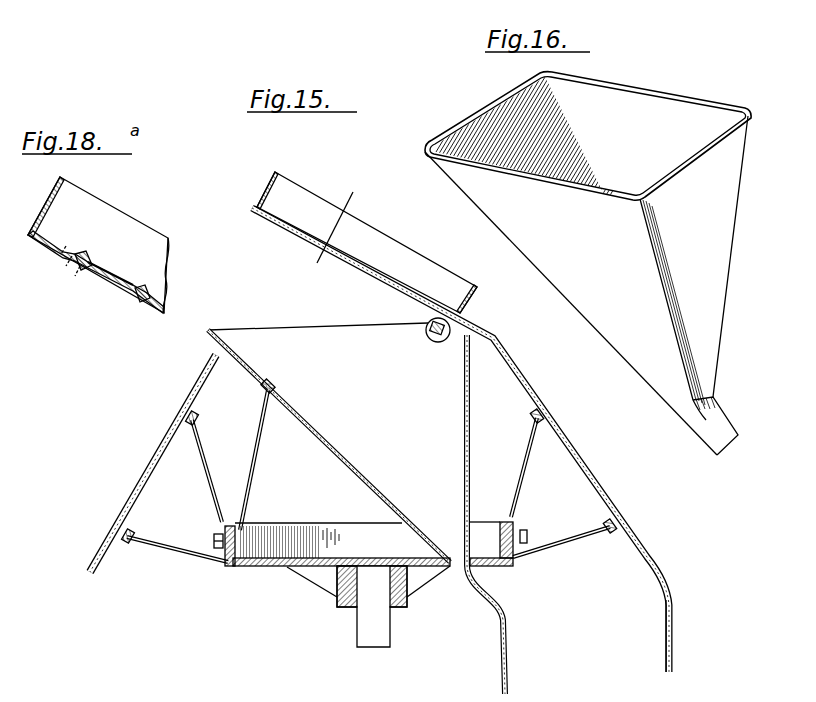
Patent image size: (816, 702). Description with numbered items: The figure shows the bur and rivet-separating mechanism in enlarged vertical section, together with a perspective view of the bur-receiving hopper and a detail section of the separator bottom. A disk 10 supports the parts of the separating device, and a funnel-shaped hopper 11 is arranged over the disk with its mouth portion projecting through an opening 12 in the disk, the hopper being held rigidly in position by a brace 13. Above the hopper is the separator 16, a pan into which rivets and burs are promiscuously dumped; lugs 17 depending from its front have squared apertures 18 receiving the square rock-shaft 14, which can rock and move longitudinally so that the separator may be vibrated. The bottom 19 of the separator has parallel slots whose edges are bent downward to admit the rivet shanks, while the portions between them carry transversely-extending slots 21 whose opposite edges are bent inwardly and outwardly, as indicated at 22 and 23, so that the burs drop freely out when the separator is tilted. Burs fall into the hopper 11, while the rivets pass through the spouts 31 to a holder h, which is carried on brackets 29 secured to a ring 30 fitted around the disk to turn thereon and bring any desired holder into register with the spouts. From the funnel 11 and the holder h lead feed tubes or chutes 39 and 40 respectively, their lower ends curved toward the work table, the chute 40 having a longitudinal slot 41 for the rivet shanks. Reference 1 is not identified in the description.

In FIG. 15, the seed box 1 is at (438, 264).
In FIG. 15, the disk 10 is at (272, 567).
In FIG. 16, the funnel-shaped hopper 11 is at (575, 258).
In FIG. 15, the funnel-shaped hopper 11 is at (329, 442).
In FIG. 15, the opening 12 is at (449, 568).
In FIG. 15, the brace 13 is at (270, 470).
In FIG. 15, the rock-shaft 14 is at (430, 336).
In FIG. 18a, the separator 16 is at (137, 225).
In FIG. 15, the separator 16 is at (367, 242).
In FIG. 15, the lugs 17 is at (436, 313).
In FIG. 15, the squared apertures 18 is at (447, 357).
In FIG. 18a, the bottom of the separator 19 is at (112, 285).
In FIG. 18a, the transversely-extending slots 21 is at (137, 303).
In FIG. 18a, the inwardly bent edge 22 is at (65, 270).
In FIG. 18a, the outwardly bent edge 23 is at (84, 257).
In FIG. 15, the brackets 29 is at (150, 540).
In FIG. 15, the ring 30 is at (227, 572).
In FIG. 15, the spouts 31 is at (487, 332).
In FIG. 15, the feed tube or chute 39 is at (501, 653).
In FIG. 15, the feed tube or chute 40 is at (673, 617).
In FIG. 15, the longitudinal slot 41 is at (663, 613).
In FIG. 15, the holder h is at (135, 482).